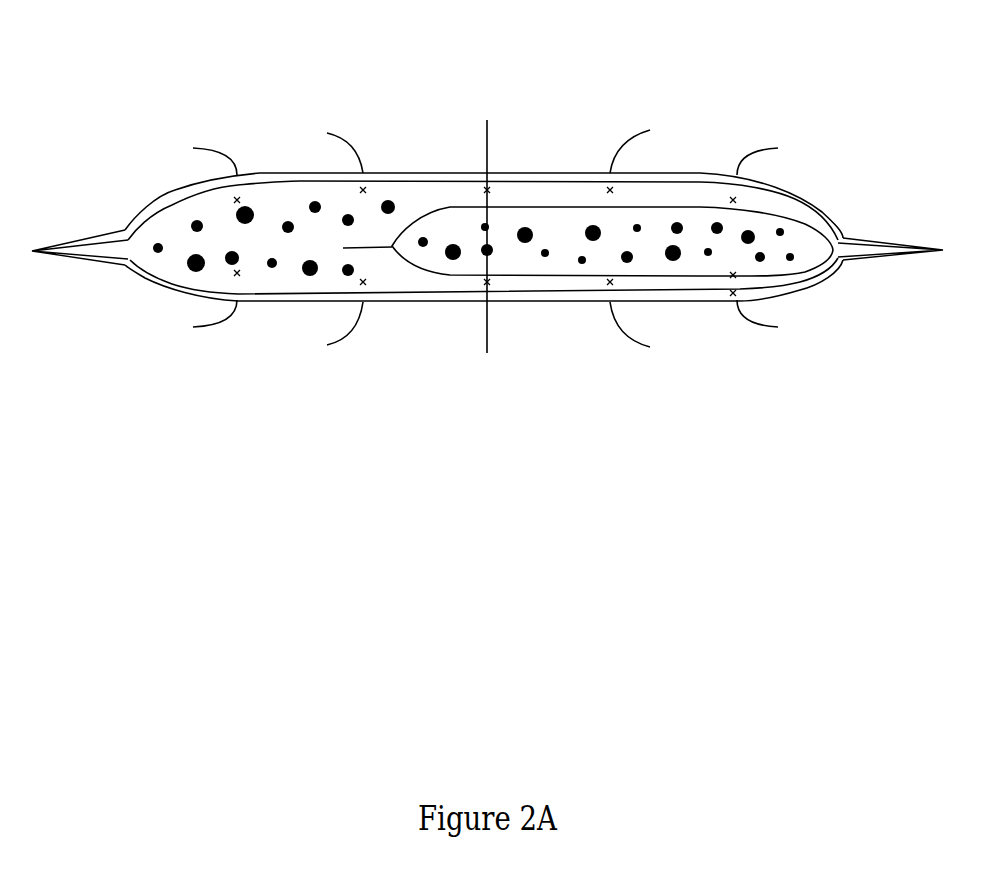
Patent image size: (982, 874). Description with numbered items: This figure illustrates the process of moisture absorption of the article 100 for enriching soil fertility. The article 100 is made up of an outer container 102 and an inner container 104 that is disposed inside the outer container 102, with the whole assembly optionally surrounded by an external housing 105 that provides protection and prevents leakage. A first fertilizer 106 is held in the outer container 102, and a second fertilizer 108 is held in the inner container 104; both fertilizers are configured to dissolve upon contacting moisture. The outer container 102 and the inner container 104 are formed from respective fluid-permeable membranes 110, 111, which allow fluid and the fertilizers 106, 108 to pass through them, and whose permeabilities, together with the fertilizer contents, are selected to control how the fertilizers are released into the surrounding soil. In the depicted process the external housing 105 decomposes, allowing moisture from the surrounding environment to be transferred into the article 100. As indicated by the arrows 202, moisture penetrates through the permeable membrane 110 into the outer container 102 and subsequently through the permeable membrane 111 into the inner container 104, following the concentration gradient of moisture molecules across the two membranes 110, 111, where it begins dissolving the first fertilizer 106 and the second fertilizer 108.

The article 100 is at (487, 230).
The outer container 102 is at (382, 166).
The inner container 104 is at (706, 200).
The external housing 105 is at (810, 200).
The first fertilizer 106 is at (194, 223).
The second fertilizer 108 is at (767, 256).
The fluid-permeable membrane 110 is at (515, 172).
The fluid-permeable membrane 111 is at (550, 197).
The arrows 202 is at (757, 330).